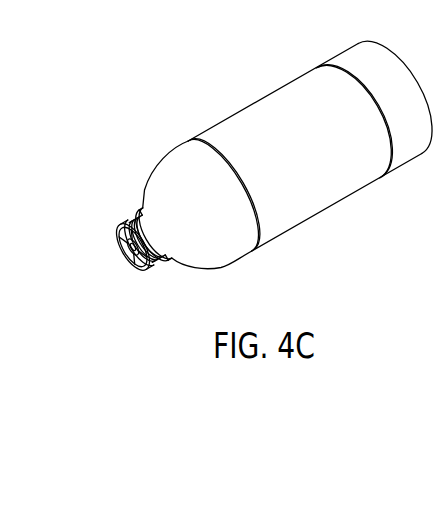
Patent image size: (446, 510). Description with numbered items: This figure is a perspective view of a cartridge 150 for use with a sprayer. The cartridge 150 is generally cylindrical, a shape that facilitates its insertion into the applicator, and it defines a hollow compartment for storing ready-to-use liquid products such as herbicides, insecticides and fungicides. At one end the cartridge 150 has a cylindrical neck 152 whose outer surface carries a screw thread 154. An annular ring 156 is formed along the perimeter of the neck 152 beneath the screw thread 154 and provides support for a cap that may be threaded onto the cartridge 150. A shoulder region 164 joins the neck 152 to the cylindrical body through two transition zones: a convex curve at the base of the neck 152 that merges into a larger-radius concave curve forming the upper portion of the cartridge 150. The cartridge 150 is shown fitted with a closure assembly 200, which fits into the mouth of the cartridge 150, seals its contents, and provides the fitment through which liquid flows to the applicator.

The cartridge 150 is at (318, 154).
The cylindrical neck 152 is at (143, 210).
The screw thread 154 is at (146, 268).
The annular ring 156 is at (171, 258).
The shoulder region 164 is at (174, 163).
The closure assembly 200 is at (125, 260).